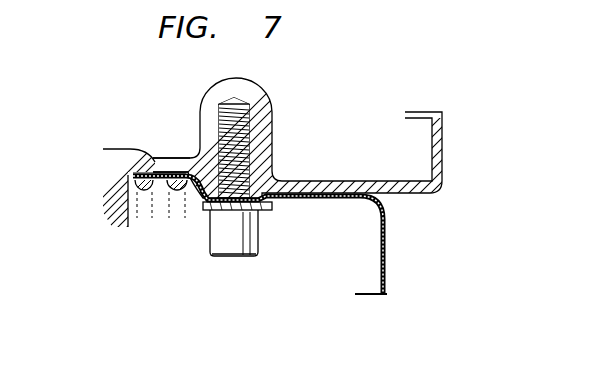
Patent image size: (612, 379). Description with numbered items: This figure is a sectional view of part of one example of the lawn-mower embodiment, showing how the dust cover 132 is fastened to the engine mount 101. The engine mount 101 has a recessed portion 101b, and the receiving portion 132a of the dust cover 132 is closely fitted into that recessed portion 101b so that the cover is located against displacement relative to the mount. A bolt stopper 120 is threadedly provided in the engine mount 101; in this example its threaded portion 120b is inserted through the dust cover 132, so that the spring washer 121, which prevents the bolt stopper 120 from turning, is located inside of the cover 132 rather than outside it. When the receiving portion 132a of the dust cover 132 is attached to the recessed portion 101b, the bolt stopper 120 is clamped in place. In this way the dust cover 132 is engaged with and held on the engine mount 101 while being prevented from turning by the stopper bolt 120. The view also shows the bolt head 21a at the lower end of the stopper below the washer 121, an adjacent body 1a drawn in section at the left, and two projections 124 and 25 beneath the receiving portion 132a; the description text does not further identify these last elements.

The engine mount 101 is at (309, 176).
The recessed portion 101b is at (165, 160).
The bolt stopper 120 is at (259, 232).
The threaded portion 120b is at (212, 132).
The spring washer 121 is at (266, 212).
The bolt head 21a is at (233, 242).
The dust cover 132 is at (386, 277).
The receiving portion 132a is at (176, 173).
The body wall 1a is at (124, 196).
The projection 124 is at (147, 194).
The projection 25 is at (178, 194).